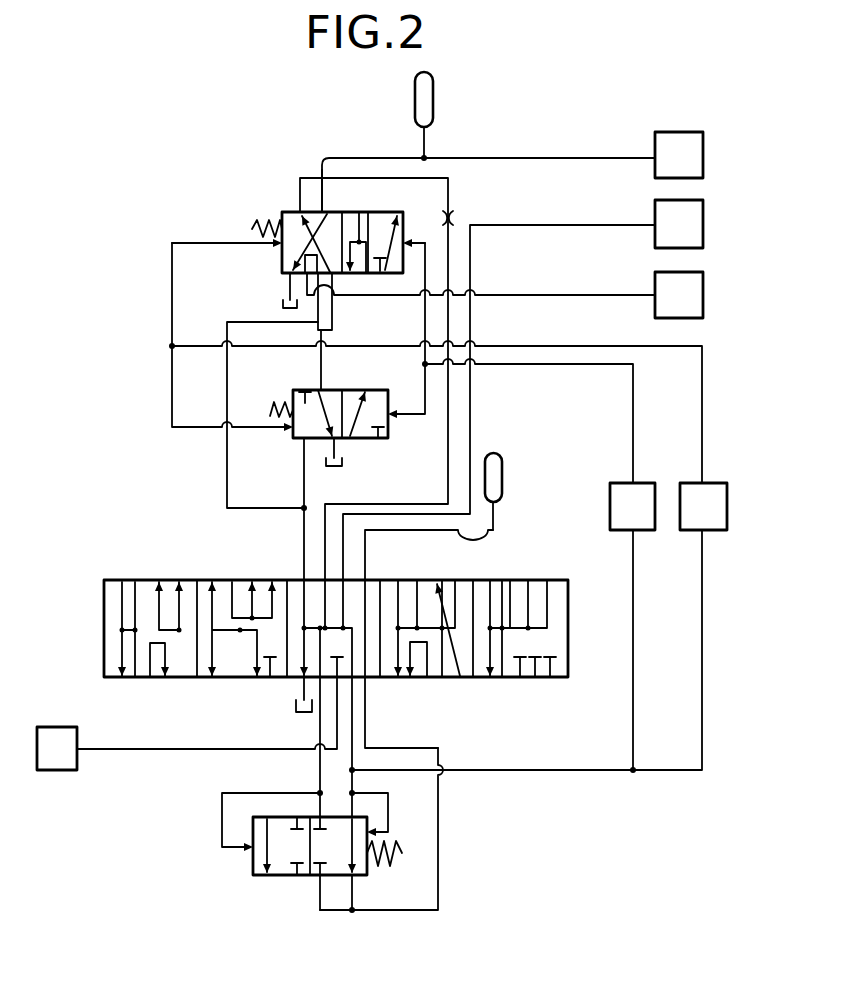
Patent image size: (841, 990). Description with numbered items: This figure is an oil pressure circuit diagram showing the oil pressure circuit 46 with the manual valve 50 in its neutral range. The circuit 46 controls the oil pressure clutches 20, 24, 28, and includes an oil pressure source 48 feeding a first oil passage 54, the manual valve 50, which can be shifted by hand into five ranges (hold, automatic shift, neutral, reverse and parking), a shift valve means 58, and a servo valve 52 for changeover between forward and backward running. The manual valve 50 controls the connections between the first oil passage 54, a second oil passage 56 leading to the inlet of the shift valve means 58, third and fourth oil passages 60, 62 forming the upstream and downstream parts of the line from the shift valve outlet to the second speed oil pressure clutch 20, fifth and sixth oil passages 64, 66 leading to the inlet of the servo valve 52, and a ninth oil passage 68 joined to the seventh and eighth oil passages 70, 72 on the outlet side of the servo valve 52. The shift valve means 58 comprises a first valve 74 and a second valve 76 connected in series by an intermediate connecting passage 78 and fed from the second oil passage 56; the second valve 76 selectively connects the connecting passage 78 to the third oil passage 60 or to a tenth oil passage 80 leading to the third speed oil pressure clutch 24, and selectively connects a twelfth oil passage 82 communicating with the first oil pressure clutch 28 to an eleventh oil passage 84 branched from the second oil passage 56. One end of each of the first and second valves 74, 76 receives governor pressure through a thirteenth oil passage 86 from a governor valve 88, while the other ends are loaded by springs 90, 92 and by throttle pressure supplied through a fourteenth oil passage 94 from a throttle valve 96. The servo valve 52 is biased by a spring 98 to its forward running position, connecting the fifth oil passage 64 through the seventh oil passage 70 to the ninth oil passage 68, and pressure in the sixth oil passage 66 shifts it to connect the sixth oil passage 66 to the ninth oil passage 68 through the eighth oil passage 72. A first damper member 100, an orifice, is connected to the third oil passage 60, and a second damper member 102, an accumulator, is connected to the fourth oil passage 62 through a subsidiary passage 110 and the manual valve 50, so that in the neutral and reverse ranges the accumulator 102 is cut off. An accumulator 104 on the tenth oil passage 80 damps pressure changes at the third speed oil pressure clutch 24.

The second speed oil pressure clutch 20 is at (703, 225).
The third speed oil pressure clutch 24 is at (703, 156).
The first oil pressure clutch 28 is at (703, 295).
The oil pressure circuit 46 is at (292, 137).
The oil pressure source 48 is at (77, 772).
The manual valve 50 is at (191, 679).
The servo valve 52 is at (245, 848).
The first oil passage 54 is at (161, 751).
The second oil passage 56 is at (303, 490).
The shift valve means 58 is at (272, 268).
The third oil passage 60 is at (450, 180).
The fourth oil passage 62 is at (471, 416).
The fifth oil passage 64 is at (366, 720).
The sixth oil passage 66 is at (319, 772).
The ninth oil passage 68 is at (440, 801).
The seventh oil passage 70 is at (353, 895).
The eighth oil passage 72 is at (318, 900).
The first valve 74 is at (360, 440).
The second valve 76 is at (293, 211).
The intermediate connecting passage 78 is at (334, 322).
The tenth oil passage 80 is at (485, 158).
The twelfth oil passage 82 is at (532, 295).
The eleventh oil passage 84 is at (228, 372).
The thirteenth oil passage 86 is at (575, 366).
The governor valve 88 is at (619, 532).
The spring 90 is at (273, 428).
The spring 92 is at (252, 228).
The fourteenth oil passage 94 is at (172, 347).
The throttle valve 96 is at (712, 532).
The spring 98 is at (403, 853).
The first damper member 100 is at (458, 218).
The second damper member 102 is at (501, 470).
The accumulator 104 is at (433, 88).
The subsidiary passage 110 is at (497, 532).